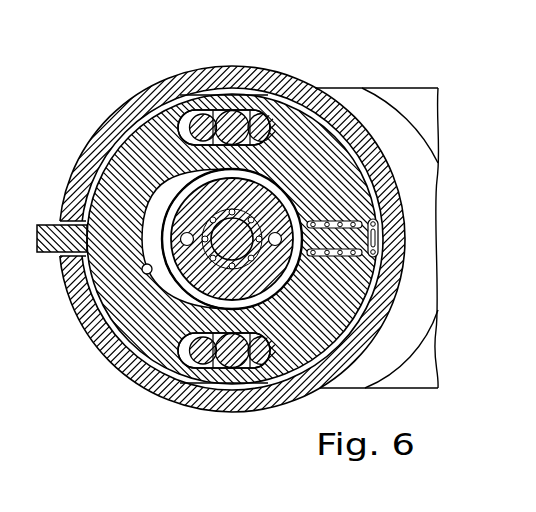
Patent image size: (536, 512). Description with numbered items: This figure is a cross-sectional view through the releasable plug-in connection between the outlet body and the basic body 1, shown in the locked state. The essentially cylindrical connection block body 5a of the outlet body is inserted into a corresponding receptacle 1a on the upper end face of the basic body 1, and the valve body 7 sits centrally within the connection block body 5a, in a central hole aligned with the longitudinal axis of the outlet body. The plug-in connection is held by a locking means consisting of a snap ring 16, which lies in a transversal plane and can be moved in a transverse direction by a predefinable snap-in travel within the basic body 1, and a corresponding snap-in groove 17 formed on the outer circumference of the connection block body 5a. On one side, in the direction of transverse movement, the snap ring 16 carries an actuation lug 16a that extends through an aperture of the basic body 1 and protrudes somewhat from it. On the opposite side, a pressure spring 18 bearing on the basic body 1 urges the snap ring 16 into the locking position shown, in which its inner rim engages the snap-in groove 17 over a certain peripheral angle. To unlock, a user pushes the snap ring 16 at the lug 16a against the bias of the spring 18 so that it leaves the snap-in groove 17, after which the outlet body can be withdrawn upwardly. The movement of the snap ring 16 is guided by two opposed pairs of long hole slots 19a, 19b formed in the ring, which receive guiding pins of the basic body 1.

The basic body 1 is at (259, 70).
The receptacle 1a is at (150, 270).
The connection block body 5a is at (219, 258).
The valve body 7 is at (200, 268).
The snap ring 16 is at (133, 158).
The actuation lug 16a is at (50, 233).
The snap-in groove 17 is at (258, 181).
The pressure spring 18 is at (343, 222).
The pair of long hole slots 19a is at (218, 370).
The pair of long hole slots 19b is at (218, 108).